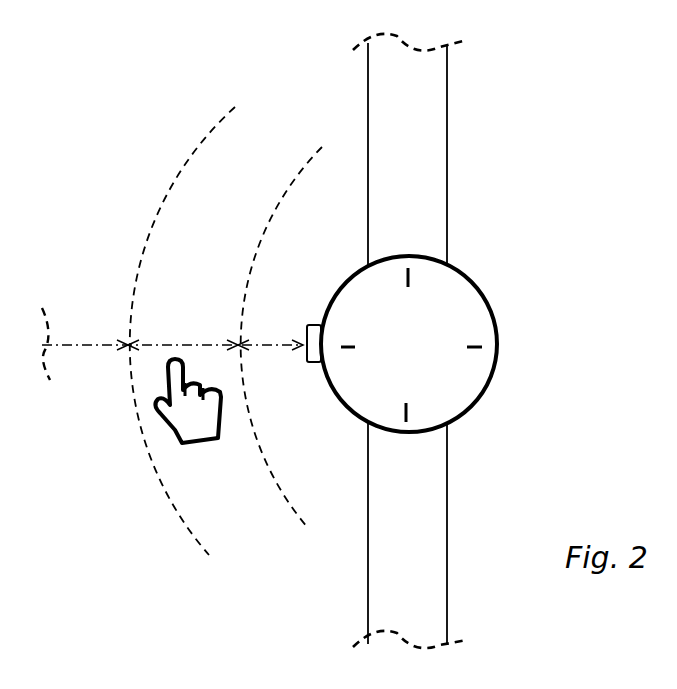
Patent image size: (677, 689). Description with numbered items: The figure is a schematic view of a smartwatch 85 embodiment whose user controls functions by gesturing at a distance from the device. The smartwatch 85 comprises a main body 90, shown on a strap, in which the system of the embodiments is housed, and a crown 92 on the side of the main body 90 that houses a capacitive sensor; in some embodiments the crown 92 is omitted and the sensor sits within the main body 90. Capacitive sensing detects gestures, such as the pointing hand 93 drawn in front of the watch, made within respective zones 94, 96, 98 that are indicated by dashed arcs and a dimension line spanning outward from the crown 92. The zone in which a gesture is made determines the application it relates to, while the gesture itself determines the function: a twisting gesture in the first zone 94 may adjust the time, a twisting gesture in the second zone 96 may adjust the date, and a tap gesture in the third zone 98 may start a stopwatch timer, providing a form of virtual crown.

The smartwatch 85 is at (472, 282).
The main body 90 is at (483, 393).
The crown 92 is at (317, 326).
The user's hand 93 is at (208, 448).
The first zone 94 is at (260, 347).
The second zone 96 is at (191, 345).
The third zone 98 is at (90, 345).